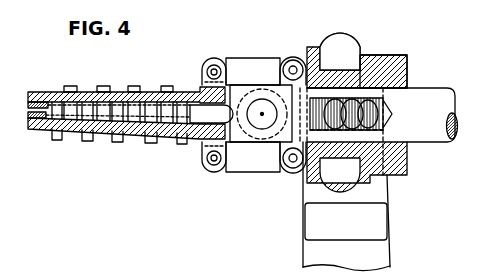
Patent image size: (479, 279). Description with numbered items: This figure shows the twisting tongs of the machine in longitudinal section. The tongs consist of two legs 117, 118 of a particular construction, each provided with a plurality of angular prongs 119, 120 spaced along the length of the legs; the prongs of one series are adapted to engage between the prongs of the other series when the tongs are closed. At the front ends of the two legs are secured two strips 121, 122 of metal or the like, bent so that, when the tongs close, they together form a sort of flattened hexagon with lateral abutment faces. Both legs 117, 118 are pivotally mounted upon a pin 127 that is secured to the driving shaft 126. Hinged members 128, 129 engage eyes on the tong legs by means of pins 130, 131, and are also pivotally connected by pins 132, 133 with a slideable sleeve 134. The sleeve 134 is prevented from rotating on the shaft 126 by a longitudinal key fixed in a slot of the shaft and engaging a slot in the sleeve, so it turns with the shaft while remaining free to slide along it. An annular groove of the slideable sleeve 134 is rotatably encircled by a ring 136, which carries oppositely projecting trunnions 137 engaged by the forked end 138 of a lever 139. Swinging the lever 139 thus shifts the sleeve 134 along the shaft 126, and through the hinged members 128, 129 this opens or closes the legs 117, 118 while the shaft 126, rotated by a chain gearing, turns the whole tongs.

The tong leg 117 is at (181, 90).
The tong leg 118 is at (193, 146).
The angular prongs 119 is at (177, 143).
The angular prongs 120 is at (152, 86).
The strip 121 is at (22, 103).
The strip 122 is at (28, 118).
The driving shaft 126 is at (432, 138).
The pin 127 is at (262, 112).
The hinged member 128 is at (239, 62).
The hinged member 129 is at (255, 162).
The pin 130 is at (216, 58).
The pin 131 is at (205, 168).
The pin 132 is at (354, 45).
The pin 133 is at (290, 174).
The slideable sleeve 134 is at (395, 56).
The ring 136 is at (350, 48).
The trunnions 137 is at (372, 112).
The forked end 138 is at (378, 190).
The lever 139 is at (383, 257).